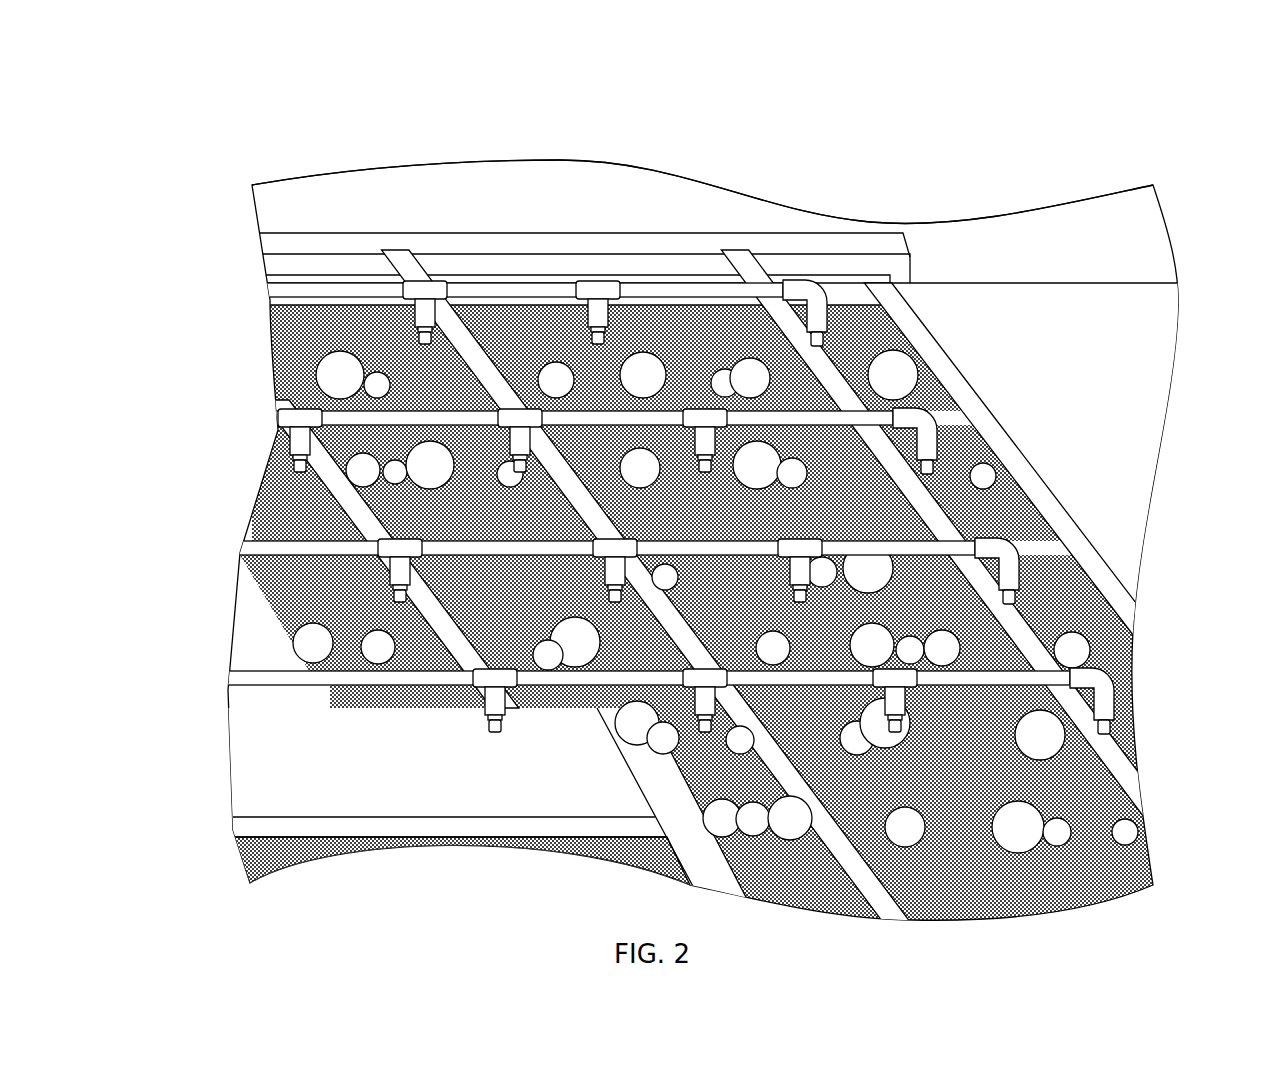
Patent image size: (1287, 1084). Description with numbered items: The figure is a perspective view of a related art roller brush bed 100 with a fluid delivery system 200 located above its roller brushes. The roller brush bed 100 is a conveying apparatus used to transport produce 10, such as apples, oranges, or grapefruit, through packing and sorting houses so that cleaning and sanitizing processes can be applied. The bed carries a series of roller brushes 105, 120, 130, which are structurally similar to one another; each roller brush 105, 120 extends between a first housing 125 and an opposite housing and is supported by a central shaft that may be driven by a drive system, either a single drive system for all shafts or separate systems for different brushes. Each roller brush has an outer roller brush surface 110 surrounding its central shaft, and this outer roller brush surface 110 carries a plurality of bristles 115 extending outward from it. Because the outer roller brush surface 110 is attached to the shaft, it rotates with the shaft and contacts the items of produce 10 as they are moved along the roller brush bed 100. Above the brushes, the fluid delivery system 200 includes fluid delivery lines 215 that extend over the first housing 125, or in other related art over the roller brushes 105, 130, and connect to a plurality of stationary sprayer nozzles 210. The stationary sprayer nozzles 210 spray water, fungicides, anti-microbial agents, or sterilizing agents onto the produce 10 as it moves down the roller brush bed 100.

The roller brush bed 100 is at (391, 217).
The roller brush 105 is at (841, 314).
The outer roller brush surface 110 is at (848, 318).
The bristles 115 is at (866, 329).
The roller brush 120 is at (946, 438).
The first housing 125 is at (266, 235).
The roller brush 130 is at (956, 328).
The fluid delivery system 200 is at (876, 884).
The stationary sprayer nozzles 210 is at (408, 322).
The fluid delivery lines 215 is at (282, 291).
The produce 10 is at (588, 649).